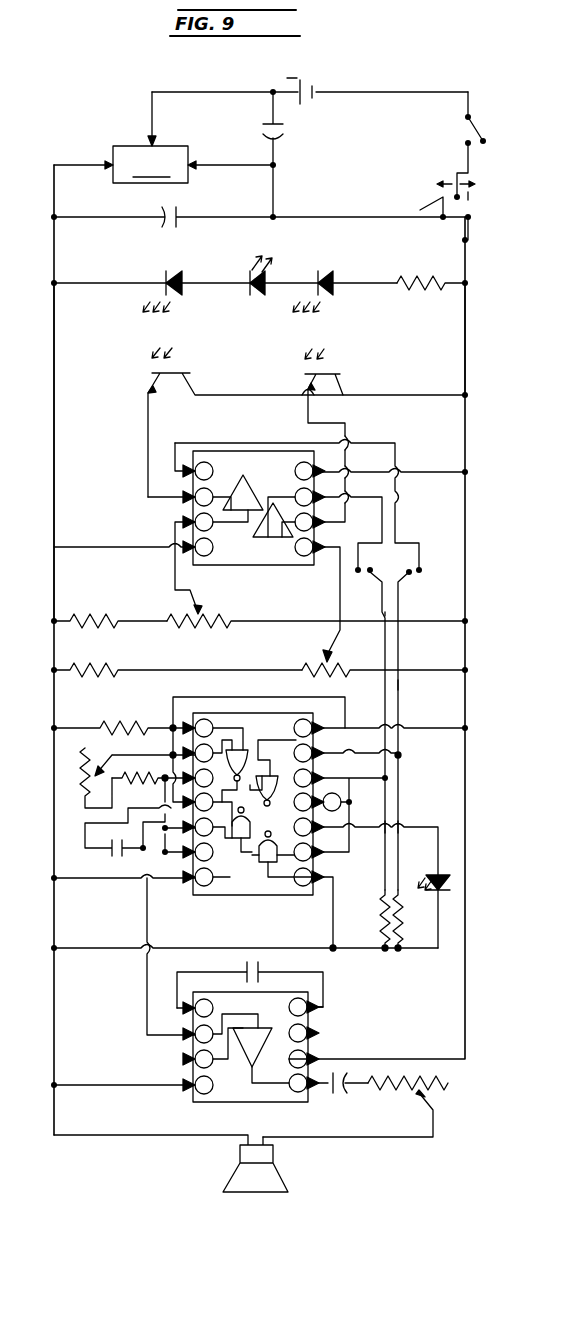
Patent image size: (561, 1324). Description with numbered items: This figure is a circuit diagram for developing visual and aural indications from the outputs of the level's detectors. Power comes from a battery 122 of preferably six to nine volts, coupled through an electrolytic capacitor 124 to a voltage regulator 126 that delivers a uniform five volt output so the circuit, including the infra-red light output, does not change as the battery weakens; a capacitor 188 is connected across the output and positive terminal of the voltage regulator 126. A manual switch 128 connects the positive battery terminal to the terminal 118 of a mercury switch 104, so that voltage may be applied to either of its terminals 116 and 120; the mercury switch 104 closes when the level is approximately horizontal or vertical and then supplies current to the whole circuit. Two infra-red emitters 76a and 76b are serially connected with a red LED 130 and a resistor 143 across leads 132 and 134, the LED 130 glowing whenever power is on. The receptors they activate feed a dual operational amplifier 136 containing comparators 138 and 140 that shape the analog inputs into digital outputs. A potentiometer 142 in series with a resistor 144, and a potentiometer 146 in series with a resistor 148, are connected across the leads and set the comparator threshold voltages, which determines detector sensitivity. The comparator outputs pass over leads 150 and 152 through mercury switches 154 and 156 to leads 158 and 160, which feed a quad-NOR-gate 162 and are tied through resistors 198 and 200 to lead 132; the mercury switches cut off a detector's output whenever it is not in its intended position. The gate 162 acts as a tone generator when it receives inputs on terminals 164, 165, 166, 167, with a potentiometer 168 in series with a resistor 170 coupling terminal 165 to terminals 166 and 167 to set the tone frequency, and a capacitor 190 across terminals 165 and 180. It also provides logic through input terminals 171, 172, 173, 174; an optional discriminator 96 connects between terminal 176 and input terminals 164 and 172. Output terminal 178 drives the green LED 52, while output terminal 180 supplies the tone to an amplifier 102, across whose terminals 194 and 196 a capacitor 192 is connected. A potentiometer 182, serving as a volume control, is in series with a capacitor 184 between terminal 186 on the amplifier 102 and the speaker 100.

The green LED 52 is at (450, 874).
The emitter 76a is at (180, 272).
The emitter 76b is at (330, 272).
The discriminator 96 is at (338, 812).
The speaker 100 is at (280, 1170).
The amplifier 102 is at (262, 1130).
The mercury switch 104 is at (442, 165).
The terminal 116 is at (462, 200).
The terminal 118 is at (465, 150).
The terminal 120 is at (438, 212).
The battery 122 is at (313, 88).
The electrolytic capacitor 124 is at (286, 135).
The voltage regulator 126 is at (163, 137).
The manual switch 128 is at (465, 122).
The LED 130 is at (268, 272).
The lead 132 is at (54, 406).
The lead 134 is at (466, 364).
The dual operational amplifier 136 is at (189, 528).
The comparator 138 is at (250, 495).
The comparator 140 is at (272, 537).
The potentiometer 142 is at (180, 628).
The resistor 143 is at (414, 278).
The resistor 144 is at (80, 628).
The potentiometer 146 is at (308, 678).
The resistor 148 is at (120, 680).
The lead 150 is at (207, 440).
The lead 152 is at (385, 497).
The mercury switch 154 is at (365, 578).
The mercury switch 156 is at (410, 584).
The lead 158 is at (384, 648).
The lead 160 is at (400, 700).
The quad-NOR-gate 162 is at (253, 819).
The terminal 164 is at (196, 718).
The terminal 165 is at (213, 750).
The terminal 166 is at (196, 840).
The terminal 167 is at (204, 866).
The potentiometer 168 is at (82, 782).
The resistor 170 is at (120, 786).
The input terminal 171 is at (305, 901).
The input terminal 172 is at (316, 858).
The input terminal 173 is at (312, 772).
The input terminal 174 is at (308, 768).
The terminal 176 is at (296, 812).
The output terminal 178 is at (318, 846).
The output terminal 180 is at (240, 806).
The potentiometer 182 is at (410, 1096).
The capacitor 184 is at (350, 1106).
The terminal 186 is at (306, 1080).
The capacitor 188 is at (158, 212).
The capacitor 190 is at (116, 862).
The capacitor 192 is at (268, 966).
The terminal 194 is at (196, 1002).
The terminal 196 is at (308, 1004).
The resistor 198 is at (380, 942).
The resistor 200 is at (402, 940).